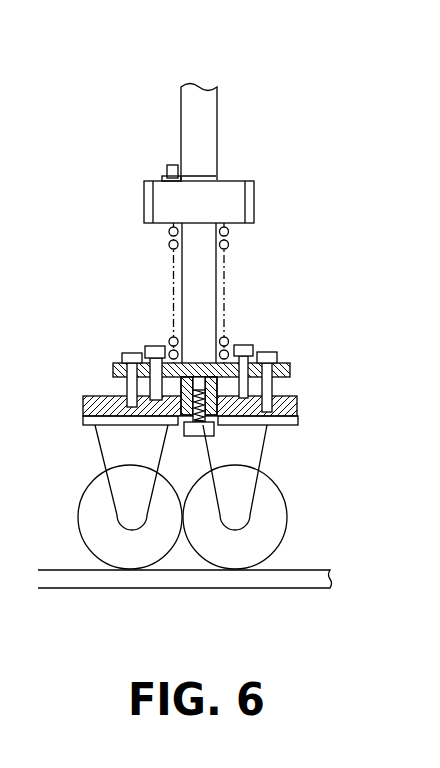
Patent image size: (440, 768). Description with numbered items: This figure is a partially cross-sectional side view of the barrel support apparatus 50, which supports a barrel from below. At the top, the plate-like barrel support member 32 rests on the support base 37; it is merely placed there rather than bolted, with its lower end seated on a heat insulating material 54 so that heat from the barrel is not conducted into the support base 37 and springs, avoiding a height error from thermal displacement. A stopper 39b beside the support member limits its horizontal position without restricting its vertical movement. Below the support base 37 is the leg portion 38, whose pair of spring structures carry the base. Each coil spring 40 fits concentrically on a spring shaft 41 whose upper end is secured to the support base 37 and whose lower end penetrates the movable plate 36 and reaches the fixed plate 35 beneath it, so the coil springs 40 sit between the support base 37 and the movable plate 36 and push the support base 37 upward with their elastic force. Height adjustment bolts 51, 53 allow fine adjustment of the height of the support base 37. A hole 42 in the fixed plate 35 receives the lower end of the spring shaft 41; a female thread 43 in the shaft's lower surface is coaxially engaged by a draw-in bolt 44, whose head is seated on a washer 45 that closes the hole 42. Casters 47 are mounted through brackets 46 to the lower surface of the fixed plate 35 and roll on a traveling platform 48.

The barrel support apparatus 50 is at (311, 111).
The barrel support member 32 is at (185, 133).
The heat insulating material 54 is at (200, 177).
The stopper 39b is at (167, 170).
The support base 37 is at (237, 202).
The leg portion 38 is at (255, 268).
The spring shaft 41 is at (197, 278).
The coil spring 40 is at (228, 338).
The movable plate 36 is at (290, 370).
The fixed plate 35 is at (297, 402).
The height adjustment bolt 53 is at (128, 387).
The height adjustment bolt 51 is at (153, 348).
The female thread 43 is at (200, 386).
The hole 42 is at (179, 393).
The bracket 46 is at (225, 438).
The washer 45 is at (205, 417).
The draw-in bolt 44 is at (205, 430).
The caster 47 is at (275, 508).
The traveling platform 48 is at (310, 573).